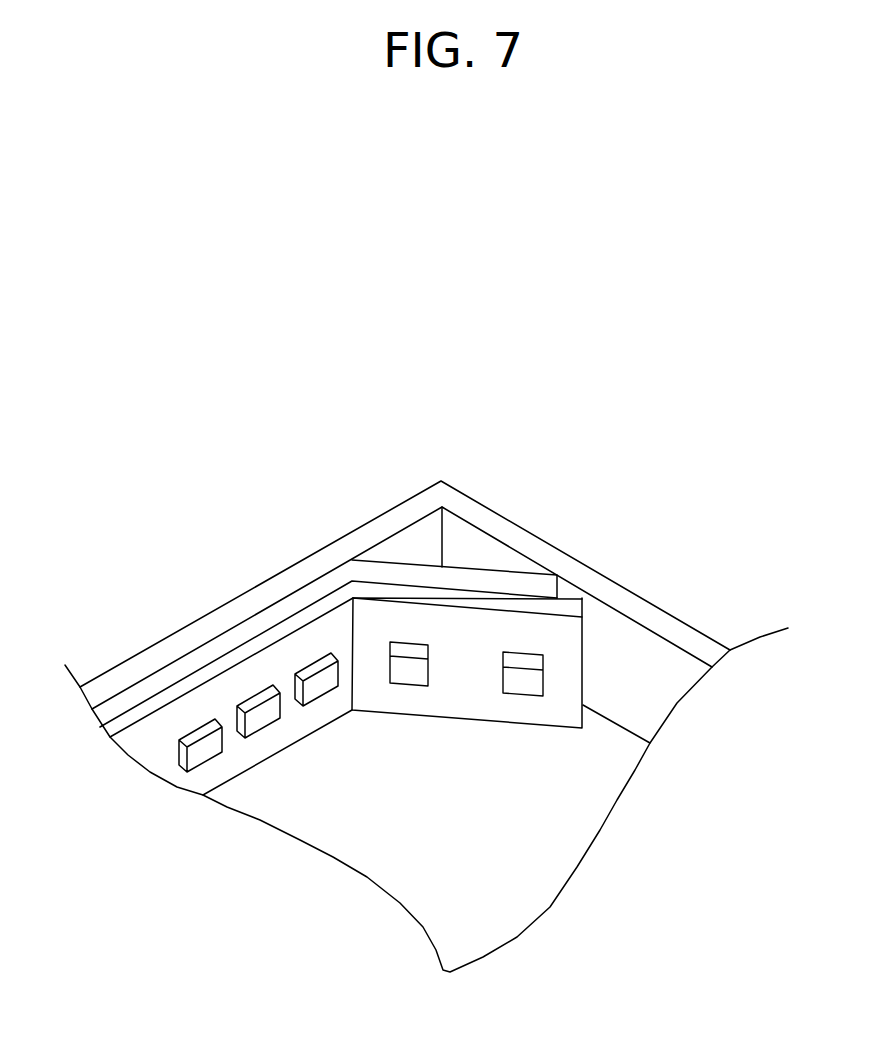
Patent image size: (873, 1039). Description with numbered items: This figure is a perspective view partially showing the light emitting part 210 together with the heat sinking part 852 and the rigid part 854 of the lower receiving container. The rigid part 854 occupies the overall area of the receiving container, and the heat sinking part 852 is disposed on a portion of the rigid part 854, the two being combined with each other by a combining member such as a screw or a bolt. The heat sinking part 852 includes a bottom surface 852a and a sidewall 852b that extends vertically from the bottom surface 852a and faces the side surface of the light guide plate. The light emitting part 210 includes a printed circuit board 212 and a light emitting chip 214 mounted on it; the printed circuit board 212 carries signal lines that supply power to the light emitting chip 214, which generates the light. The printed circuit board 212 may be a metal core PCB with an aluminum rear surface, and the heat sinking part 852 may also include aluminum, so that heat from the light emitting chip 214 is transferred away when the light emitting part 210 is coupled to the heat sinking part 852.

The light emitting part 210 is at (364, 442).
The printed circuit board 212 is at (308, 660).
The light emitting chip 214 is at (338, 594).
The heat sinking part 852 is at (192, 556).
The bottom surface 852a is at (263, 795).
The sidewall 852b is at (223, 640).
The rigid part 854 is at (532, 542).